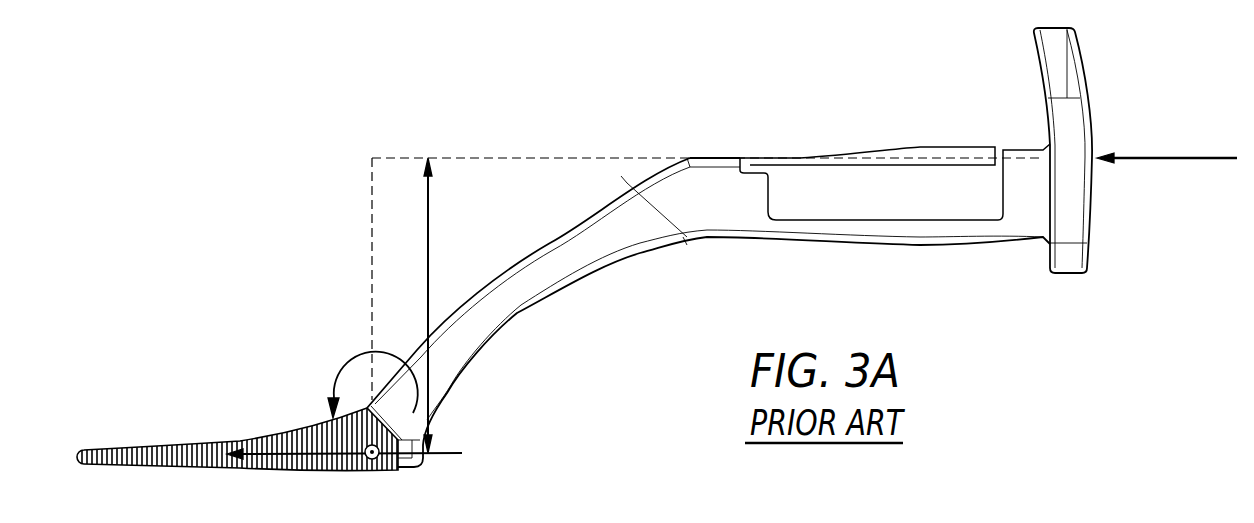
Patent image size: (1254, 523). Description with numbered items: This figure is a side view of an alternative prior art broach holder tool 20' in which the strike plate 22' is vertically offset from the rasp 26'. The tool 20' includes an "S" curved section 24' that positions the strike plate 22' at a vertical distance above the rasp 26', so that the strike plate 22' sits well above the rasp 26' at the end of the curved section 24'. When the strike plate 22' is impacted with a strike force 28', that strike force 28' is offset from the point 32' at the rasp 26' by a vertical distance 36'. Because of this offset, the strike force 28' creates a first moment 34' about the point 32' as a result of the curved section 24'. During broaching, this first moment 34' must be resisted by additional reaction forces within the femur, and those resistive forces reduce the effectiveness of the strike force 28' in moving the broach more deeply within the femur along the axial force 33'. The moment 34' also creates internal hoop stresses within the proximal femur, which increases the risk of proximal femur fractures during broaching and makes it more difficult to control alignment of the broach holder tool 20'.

The broach holder tool 20' is at (616, 273).
The strike plate 22' is at (1099, 148).
The section 24' is at (708, 305).
The rasp 26' is at (265, 424).
The strike force 28' is at (1167, 199).
The point 32' is at (392, 484).
The axial force 33' is at (319, 465).
The first moment 34' is at (365, 355).
The vertical distance 36' is at (707, 305).